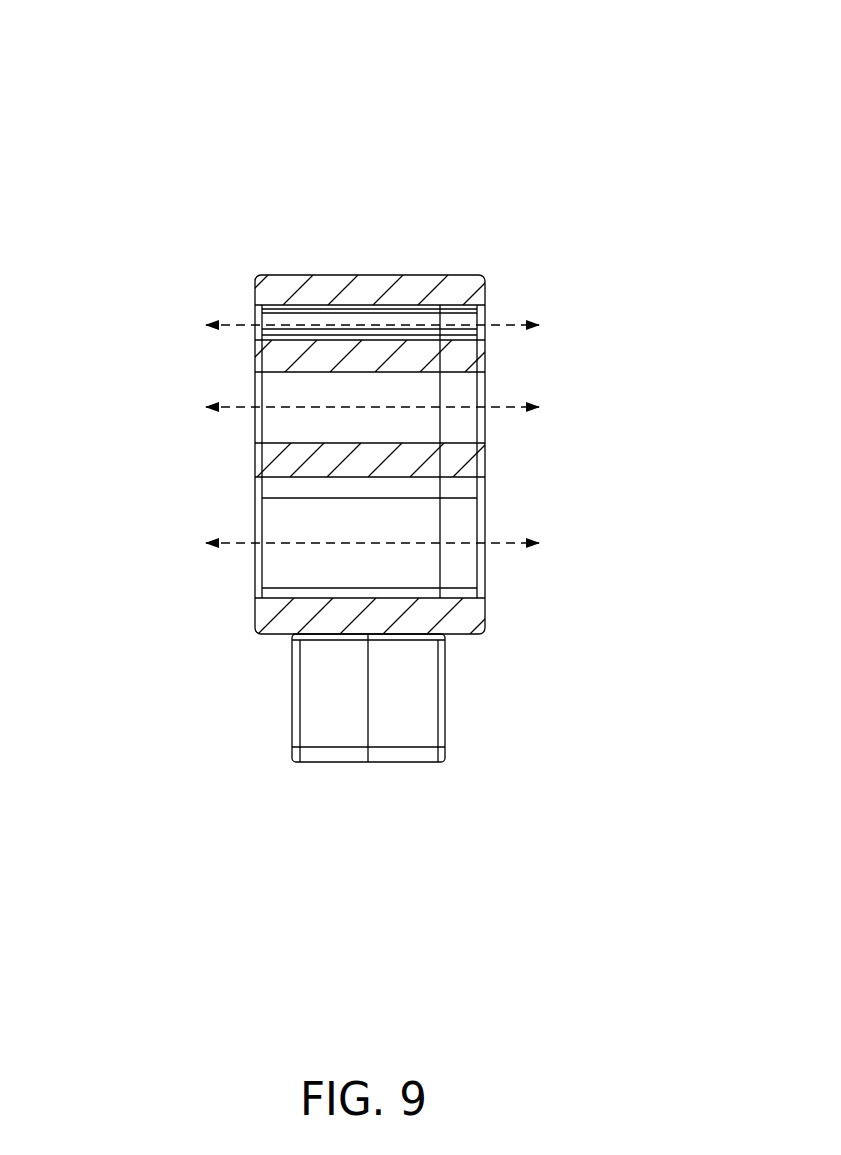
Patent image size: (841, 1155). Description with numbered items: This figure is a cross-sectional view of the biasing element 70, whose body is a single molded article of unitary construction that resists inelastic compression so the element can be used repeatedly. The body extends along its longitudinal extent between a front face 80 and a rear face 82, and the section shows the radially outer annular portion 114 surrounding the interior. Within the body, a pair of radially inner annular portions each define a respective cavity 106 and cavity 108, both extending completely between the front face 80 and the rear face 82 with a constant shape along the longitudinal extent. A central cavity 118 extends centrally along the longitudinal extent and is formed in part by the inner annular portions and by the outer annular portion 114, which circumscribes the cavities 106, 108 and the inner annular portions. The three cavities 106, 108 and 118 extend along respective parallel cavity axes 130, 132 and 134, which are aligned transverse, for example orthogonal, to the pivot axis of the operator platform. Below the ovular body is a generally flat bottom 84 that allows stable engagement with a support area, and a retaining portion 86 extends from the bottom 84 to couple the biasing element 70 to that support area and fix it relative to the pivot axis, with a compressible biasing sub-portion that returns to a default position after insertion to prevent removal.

The biasing element 70 is at (214, 266).
The radially outer annular portion 114 is at (441, 260).
The cavity 106 is at (468, 320).
The cavity axis 130 is at (233, 330).
The cavity axis 132 is at (238, 410).
The central cavity 118 is at (464, 425).
The cavity 108 is at (464, 528).
The cavity axis 134 is at (237, 548).
The front face 80 is at (246, 585).
The rear face 82 is at (491, 602).
The bottom 84 is at (268, 652).
The retaining portion 86 is at (350, 762).